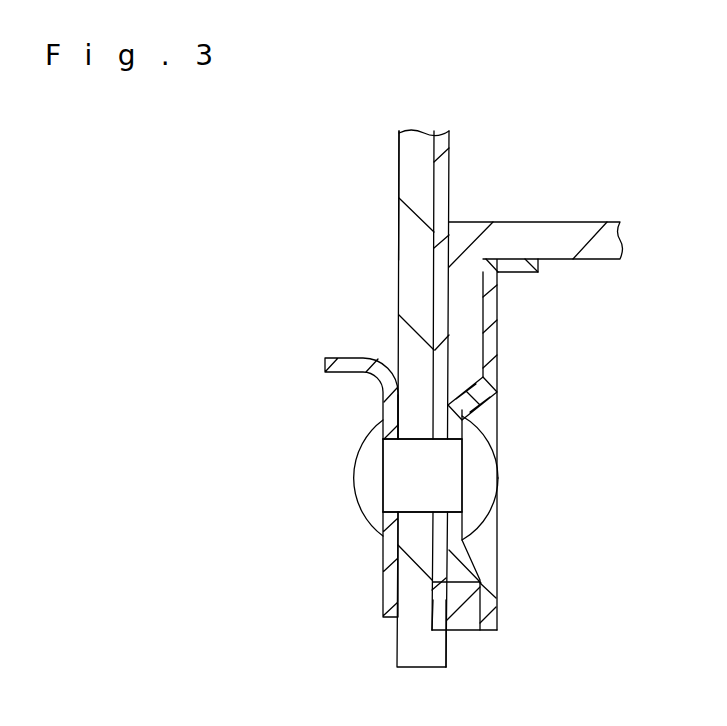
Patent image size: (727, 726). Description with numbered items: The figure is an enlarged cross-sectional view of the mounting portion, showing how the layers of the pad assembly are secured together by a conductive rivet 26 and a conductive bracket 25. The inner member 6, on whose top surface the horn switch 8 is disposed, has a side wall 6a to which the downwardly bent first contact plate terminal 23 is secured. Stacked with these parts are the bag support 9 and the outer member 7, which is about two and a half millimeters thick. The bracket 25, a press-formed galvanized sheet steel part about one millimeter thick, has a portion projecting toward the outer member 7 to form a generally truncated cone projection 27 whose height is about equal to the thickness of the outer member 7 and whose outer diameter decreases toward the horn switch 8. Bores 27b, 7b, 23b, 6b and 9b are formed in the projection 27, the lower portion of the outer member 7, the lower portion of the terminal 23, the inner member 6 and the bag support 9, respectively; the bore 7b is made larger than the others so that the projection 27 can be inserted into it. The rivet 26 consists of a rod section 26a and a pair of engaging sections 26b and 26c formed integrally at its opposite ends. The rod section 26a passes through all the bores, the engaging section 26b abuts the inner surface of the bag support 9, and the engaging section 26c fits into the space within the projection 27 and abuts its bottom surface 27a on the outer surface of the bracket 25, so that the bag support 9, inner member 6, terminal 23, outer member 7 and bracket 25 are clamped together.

The inner member 6 is at (399, 241).
The side wall 6a is at (399, 158).
The bore 6b is at (413, 447).
The outer member 7 is at (575, 222).
The bore 7b is at (485, 383).
The horn switch 8 is at (449, 140).
The bag support 9 is at (346, 358).
The bore 9b is at (385, 515).
The first contact plate terminal 23 is at (440, 190).
The bore 23b is at (424, 503).
The bracket 25 is at (495, 319).
The rivet 26 is at (272, 410).
The rod section 26a is at (393, 457).
The engaging section 26b is at (365, 472).
The engaging section 26c is at (473, 470).
The projection 27 is at (483, 553).
The bottom surface 27a is at (483, 432).
The bore 27b is at (483, 517).